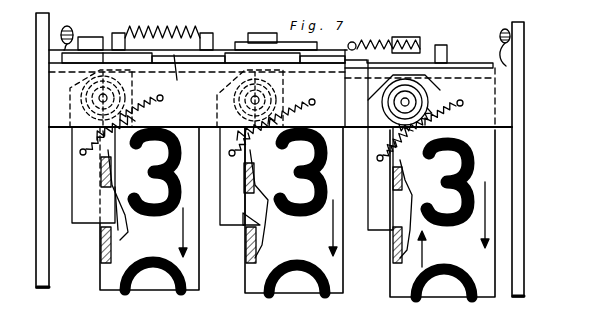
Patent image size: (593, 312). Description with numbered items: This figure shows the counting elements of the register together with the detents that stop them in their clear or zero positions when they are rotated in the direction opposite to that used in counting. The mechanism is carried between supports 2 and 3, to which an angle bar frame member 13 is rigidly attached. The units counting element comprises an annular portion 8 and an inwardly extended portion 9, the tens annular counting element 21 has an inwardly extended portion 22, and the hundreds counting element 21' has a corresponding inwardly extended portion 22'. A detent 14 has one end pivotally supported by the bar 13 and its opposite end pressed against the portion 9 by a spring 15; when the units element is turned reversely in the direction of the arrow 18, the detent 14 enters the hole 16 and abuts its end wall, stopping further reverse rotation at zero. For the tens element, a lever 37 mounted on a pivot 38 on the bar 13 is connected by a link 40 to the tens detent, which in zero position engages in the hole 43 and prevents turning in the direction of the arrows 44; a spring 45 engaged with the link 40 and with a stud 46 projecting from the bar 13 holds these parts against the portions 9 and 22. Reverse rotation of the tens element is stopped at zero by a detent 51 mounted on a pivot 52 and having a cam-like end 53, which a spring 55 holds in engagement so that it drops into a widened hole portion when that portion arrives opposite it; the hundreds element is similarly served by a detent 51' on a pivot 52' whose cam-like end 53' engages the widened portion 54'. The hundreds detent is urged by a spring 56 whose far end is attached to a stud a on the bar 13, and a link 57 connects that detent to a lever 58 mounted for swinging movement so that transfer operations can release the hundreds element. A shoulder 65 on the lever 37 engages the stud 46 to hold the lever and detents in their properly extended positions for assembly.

The support 2 is at (520, 215).
The support 3 is at (40, 180).
The annular portion of units counting element 8 is at (486, 166).
The inwardly extended portion of units counting element 9 is at (395, 243).
The angle bar frame member 13 is at (505, 112).
The detent 14 is at (375, 188).
The spring 15 is at (396, 148).
The hole 16 is at (402, 190).
The arrow 18 is at (425, 250).
The tens annular counting element 21 is at (304, 210).
The hundreds counting element 21' is at (160, 208).
The inwardly extended portion of tens counting element 22 is at (265, 206).
The inwardly extended portion of hundreds counting element 22' is at (92, 228).
The lever 37 is at (383, 90).
The pivot 38 is at (412, 65).
The link 40 is at (318, 47).
The hole 43 is at (262, 29).
The arrows 44 is at (188, 232).
The spring 45 is at (392, 55).
The stud 46 is at (447, 52).
The detent 51 is at (223, 176).
The detent 51' is at (85, 187).
The pivot 52 is at (174, 103).
The pivot 52' is at (112, 98).
The cam-like end 53 is at (239, 210).
The cam-like end 53' is at (123, 245).
The widened portion of hole 54' is at (120, 195).
The spring 55 is at (305, 110).
The spring 56 is at (162, 26).
The link 57 is at (272, 197).
The lever 58 is at (277, 60).
The shoulder 65 is at (450, 65).
The stud a is at (203, 31).